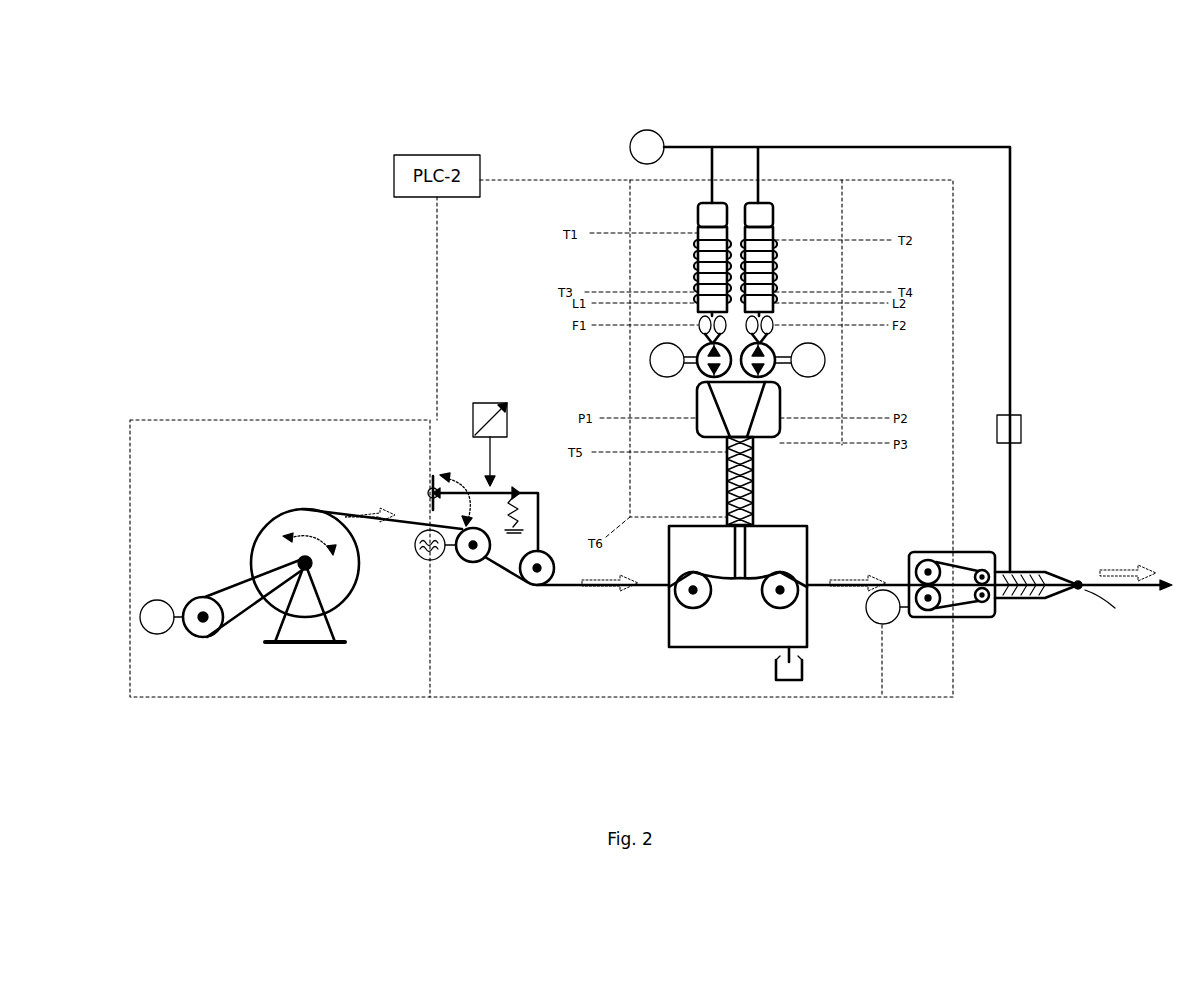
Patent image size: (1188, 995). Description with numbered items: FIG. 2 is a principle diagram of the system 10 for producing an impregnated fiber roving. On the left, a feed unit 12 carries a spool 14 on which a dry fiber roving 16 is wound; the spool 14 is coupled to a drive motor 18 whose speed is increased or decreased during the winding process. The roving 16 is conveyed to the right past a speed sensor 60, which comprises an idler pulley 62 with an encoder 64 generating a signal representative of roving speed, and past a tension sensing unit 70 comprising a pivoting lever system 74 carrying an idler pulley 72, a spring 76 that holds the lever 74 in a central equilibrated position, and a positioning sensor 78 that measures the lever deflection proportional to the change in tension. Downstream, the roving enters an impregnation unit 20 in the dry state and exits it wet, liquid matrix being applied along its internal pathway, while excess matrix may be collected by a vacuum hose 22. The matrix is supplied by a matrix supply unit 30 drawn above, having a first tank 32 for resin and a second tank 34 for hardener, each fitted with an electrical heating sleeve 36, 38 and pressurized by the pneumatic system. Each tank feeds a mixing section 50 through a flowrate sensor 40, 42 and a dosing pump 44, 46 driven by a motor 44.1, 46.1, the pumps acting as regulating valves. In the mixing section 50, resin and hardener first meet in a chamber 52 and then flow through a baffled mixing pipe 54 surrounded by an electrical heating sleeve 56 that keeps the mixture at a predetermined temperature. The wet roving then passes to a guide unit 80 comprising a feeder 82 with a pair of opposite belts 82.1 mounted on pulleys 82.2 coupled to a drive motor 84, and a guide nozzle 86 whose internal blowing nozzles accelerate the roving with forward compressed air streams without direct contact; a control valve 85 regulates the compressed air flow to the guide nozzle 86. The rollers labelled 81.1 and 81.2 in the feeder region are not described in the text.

The system for producing an impregnated fiber roving 10 is at (1003, 108).
The feed unit 12 is at (293, 665).
The spool 14 is at (348, 600).
The fiber roving 16 is at (386, 522).
The drive motor 18 is at (186, 636).
The impregnation unit 20 is at (703, 647).
The vacuum hose 22 is at (790, 680).
The matrix supply unit 30 is at (792, 207).
The first tank 32 is at (698, 216).
The second tank 34 is at (773, 216).
The electrical heating sleeve 36 is at (696, 272).
The electrical heating sleeve 38 is at (776, 272).
The flowrate sensor 40 is at (700, 330).
The flowrate sensor 42 is at (770, 330).
The pump 44 is at (700, 372).
The motor 44.1 is at (650, 360).
The pump 46 is at (770, 372).
The motor 46.1 is at (826, 360).
The mixing section 50 is at (720, 481).
The chamber 52 is at (782, 405).
The mixing pipe 54 is at (755, 455).
The electrical heating sleeve 56 is at (755, 500).
The speed sensor 60 is at (466, 600).
The idler pulley 62 is at (478, 562).
The encoder 64 is at (436, 562).
The tension sensing unit 70 is at (508, 482).
The idler pulley 72 is at (548, 548).
The pivoting lever system 74 is at (455, 465).
The spring 76 is at (525, 505).
The positioning sensor 78 is at (492, 402).
The guide unit 80 is at (1032, 553).
The first feed roller 81.1 is at (922, 560).
The second feed roller 81.2 is at (922, 610).
The feeder 82 is at (965, 625).
The belts 82.1 is at (958, 555).
The pulleys 82.2 is at (990, 555).
The drive motor 84 is at (875, 625).
The control valve 85 is at (1015, 420).
The guide nozzle 86 is at (1030, 600).